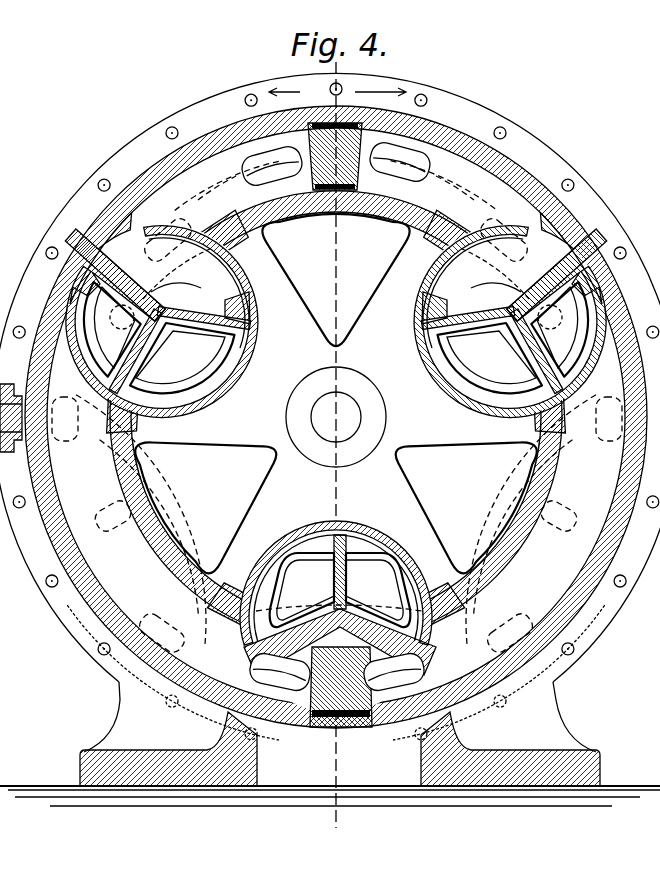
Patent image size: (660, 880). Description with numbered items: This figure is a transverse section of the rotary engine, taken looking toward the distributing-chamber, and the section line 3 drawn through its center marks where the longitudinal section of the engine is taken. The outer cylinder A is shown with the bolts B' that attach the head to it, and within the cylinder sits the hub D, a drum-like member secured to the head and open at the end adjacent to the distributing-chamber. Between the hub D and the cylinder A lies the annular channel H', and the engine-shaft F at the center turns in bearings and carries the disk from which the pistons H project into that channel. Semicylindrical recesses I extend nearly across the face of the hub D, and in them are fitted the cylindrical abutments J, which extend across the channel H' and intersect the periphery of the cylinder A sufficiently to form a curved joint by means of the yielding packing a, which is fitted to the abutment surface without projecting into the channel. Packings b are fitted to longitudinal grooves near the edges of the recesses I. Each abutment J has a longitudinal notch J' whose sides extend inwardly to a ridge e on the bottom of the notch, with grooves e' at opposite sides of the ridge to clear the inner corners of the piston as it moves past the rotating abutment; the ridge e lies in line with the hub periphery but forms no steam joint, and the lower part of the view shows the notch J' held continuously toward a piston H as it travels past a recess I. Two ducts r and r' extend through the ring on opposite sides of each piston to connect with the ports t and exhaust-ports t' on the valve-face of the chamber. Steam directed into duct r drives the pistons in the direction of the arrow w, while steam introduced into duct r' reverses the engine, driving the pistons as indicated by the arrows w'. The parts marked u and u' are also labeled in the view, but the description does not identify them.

The section line 3 is at (331, 440).
The cylinder A is at (518, 168).
The bolts B' is at (336, 411).
The arrow w is at (380, 74).
The arrows w' is at (276, 74).
The hub D is at (540, 489).
The packings b is at (236, 228).
The engine-shaft F is at (360, 419).
The semicylindrical recesses I is at (256, 298).
The yielding packing a is at (76, 252).
The cylindrical abutments J is at (318, 465).
The longitudinal notch J' is at (336, 480).
The ridge e is at (336, 276).
The grooves e' is at (336, 315).
The pistons H is at (321, 437).
The annular channel H' is at (329, 524).
The duct r is at (332, 419).
The duct r' is at (340, 419).
The ports t is at (341, 402).
The exhaust-ports t' is at (337, 430).
The port u is at (217, 178).
The port u' is at (455, 183).